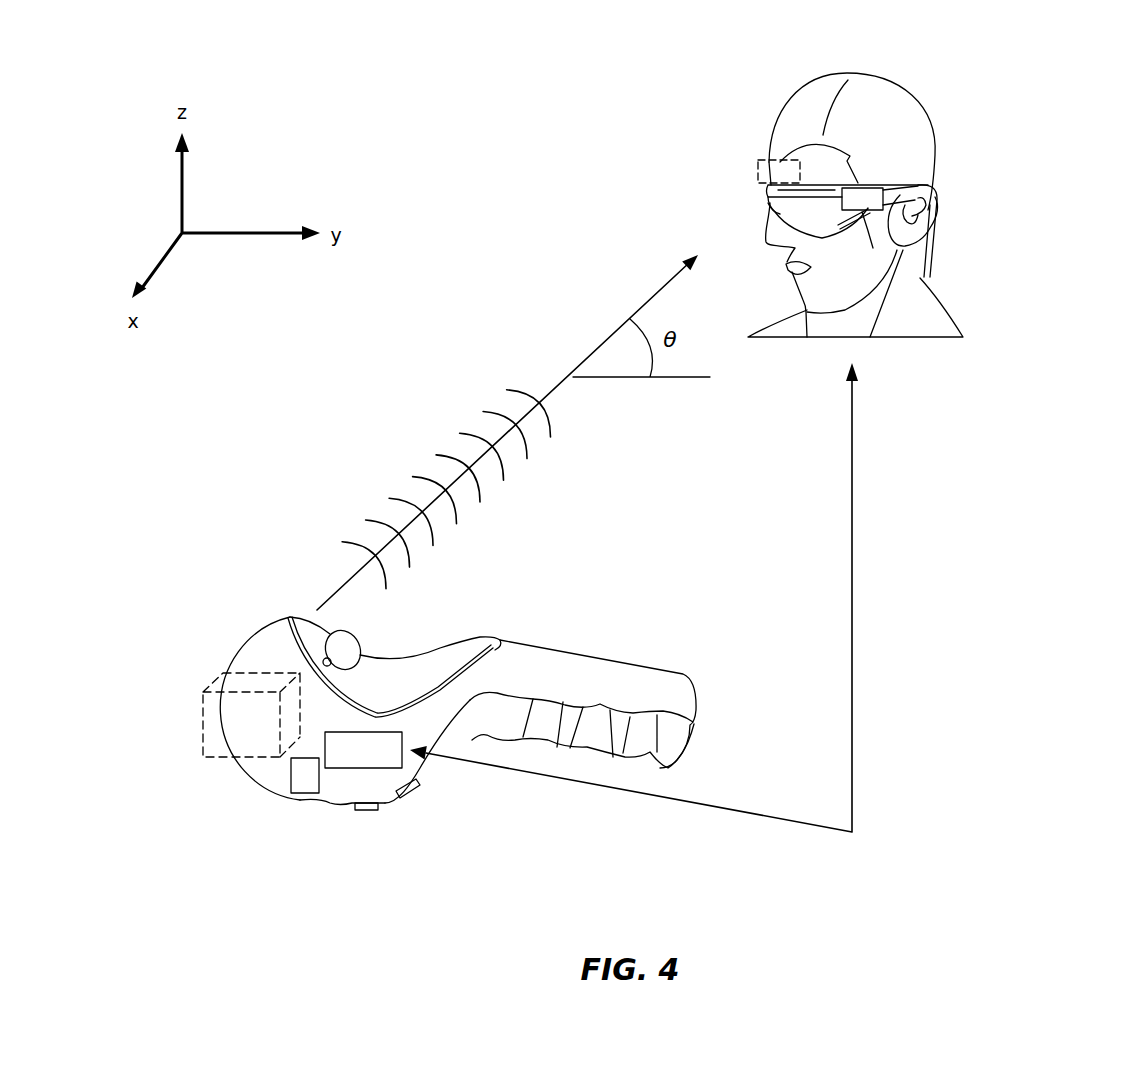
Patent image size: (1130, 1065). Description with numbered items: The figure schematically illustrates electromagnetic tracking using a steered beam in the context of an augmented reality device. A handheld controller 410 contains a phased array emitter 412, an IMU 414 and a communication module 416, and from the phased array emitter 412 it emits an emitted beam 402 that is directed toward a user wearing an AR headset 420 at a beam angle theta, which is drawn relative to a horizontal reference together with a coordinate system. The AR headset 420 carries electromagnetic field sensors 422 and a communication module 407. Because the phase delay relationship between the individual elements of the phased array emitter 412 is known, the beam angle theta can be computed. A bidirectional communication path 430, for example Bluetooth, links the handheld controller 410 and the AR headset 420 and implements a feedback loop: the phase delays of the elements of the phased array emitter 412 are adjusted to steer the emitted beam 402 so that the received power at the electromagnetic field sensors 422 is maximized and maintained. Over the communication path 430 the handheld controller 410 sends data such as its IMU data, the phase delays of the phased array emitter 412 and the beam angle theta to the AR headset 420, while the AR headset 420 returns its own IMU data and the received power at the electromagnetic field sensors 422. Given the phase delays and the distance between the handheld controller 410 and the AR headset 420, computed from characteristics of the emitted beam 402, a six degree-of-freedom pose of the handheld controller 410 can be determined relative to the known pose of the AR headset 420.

The emitted beam 402 is at (388, 425).
The communication module 407 is at (862, 210).
The handheld controller 410 is at (378, 724).
The phased array emitter 412 is at (222, 757).
The IMU 414 is at (303, 793).
The communication module 416 is at (380, 768).
The AR headset 420 is at (873, 205).
The electromagnetic field sensors 422 is at (941, 121).
The communication path 430 is at (852, 592).